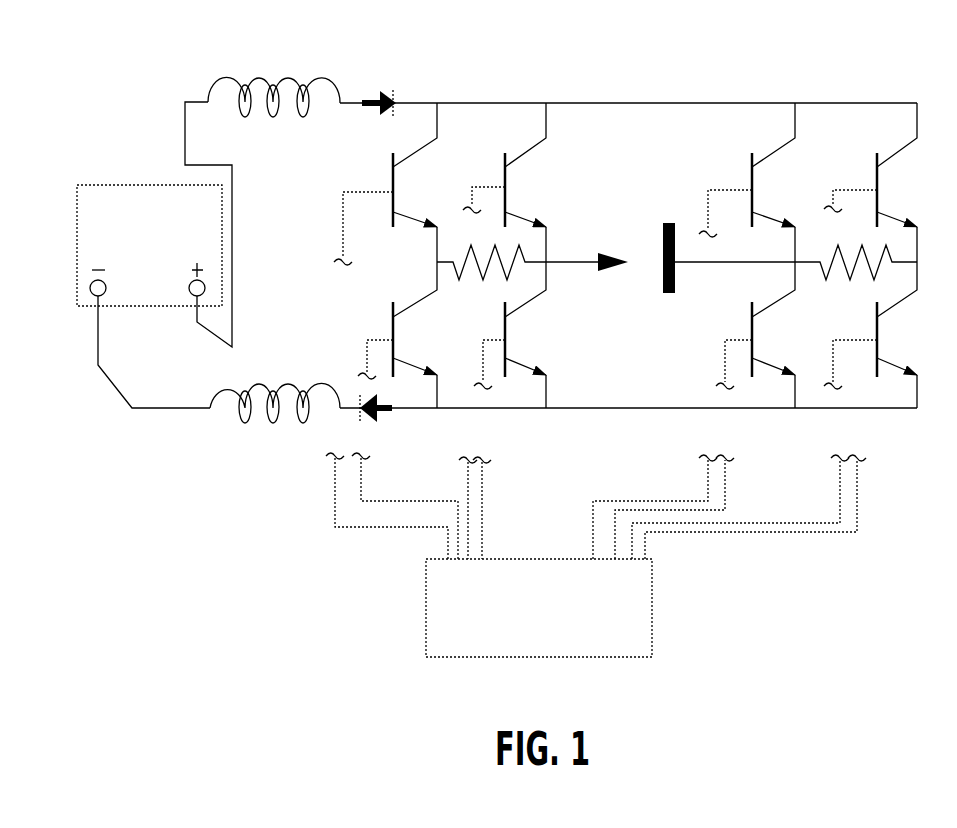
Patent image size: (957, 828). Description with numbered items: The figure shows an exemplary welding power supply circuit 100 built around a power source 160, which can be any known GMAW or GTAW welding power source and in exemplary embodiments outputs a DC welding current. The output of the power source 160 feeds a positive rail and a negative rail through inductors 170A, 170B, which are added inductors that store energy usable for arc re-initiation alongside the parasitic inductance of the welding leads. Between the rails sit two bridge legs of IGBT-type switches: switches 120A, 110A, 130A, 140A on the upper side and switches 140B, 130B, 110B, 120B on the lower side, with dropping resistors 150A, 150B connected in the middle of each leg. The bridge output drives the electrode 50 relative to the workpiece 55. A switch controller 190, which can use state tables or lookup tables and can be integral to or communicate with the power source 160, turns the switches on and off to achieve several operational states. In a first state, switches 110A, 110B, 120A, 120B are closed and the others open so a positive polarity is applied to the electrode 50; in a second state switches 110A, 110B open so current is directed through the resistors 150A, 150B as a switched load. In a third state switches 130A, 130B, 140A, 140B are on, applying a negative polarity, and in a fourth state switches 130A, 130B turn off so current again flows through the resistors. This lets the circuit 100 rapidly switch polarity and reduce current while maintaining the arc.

The power supply circuit 100 is at (800, 28).
The power source 160 is at (149, 228).
The inductor 170A is at (274, 77).
The inductor 170B is at (275, 383).
The switch 120A is at (391, 184).
The switch 110A is at (511, 182).
The switch 130A is at (751, 182).
The switch 140A is at (875, 182).
The switch 140B is at (401, 335).
The switch 130B is at (516, 335).
The switch 110B is at (759, 335).
The switch 120B is at (875, 335).
The dropping resistor 150A is at (491, 246).
The dropping resistor 150B is at (796, 247).
The electrode 50 is at (573, 263).
The workpiece 55 is at (675, 277).
The switch controller 190 is at (652, 607).